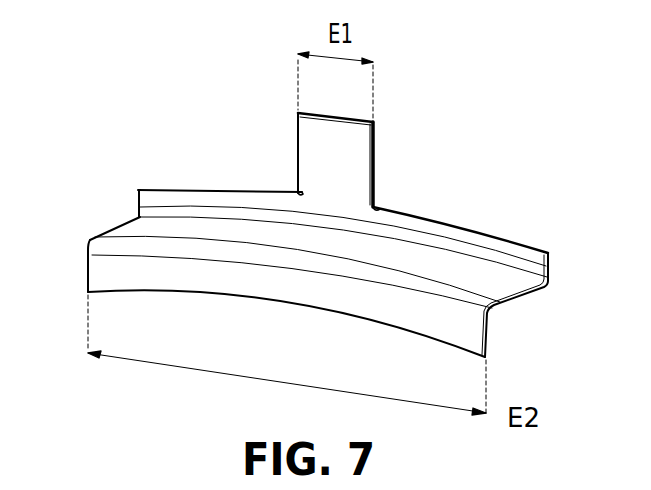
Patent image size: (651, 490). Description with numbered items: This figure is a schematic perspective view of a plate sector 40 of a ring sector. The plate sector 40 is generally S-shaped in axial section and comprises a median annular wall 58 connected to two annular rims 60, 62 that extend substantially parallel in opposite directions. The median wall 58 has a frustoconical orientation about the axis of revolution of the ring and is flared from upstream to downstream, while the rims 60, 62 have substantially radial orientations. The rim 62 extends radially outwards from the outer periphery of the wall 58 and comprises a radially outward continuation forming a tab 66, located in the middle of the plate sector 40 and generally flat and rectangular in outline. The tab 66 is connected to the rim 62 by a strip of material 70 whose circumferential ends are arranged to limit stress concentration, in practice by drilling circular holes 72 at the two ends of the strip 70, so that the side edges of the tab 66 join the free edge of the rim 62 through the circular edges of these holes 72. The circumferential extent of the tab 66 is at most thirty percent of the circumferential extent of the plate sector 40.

The plate sector 40 is at (493, 198).
The median annular wall 58 is at (113, 225).
The annular rim 60 is at (86, 275).
The annular rim 62 is at (140, 190).
The tab 66 is at (375, 129).
The strip of material 70 is at (322, 112).
The holes 72 is at (300, 190).